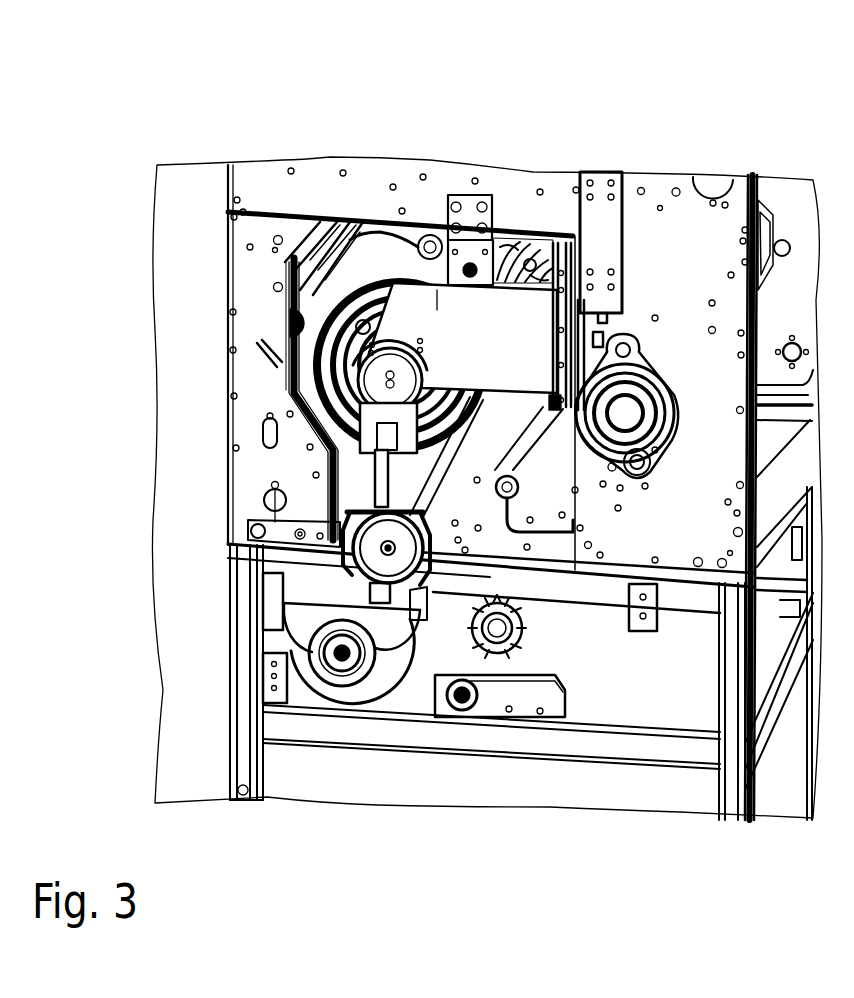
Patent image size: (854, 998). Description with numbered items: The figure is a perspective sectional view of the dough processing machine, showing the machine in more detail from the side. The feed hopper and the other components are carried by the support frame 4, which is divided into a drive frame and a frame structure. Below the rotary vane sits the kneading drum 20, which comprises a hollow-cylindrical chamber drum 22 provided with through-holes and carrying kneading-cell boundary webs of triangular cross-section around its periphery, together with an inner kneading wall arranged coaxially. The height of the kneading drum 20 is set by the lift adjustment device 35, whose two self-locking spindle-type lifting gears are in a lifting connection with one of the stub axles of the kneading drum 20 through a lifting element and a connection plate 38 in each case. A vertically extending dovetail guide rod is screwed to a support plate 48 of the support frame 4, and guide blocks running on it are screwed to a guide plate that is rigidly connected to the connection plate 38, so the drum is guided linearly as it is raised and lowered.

The support frame 4 is at (228, 600).
The kneading drum 20 is at (287, 342).
The chamber drum 22 is at (515, 237).
The lift adjustment device 35 is at (350, 514).
The connection plate 38 is at (437, 310).
The support plate 48 is at (692, 230).